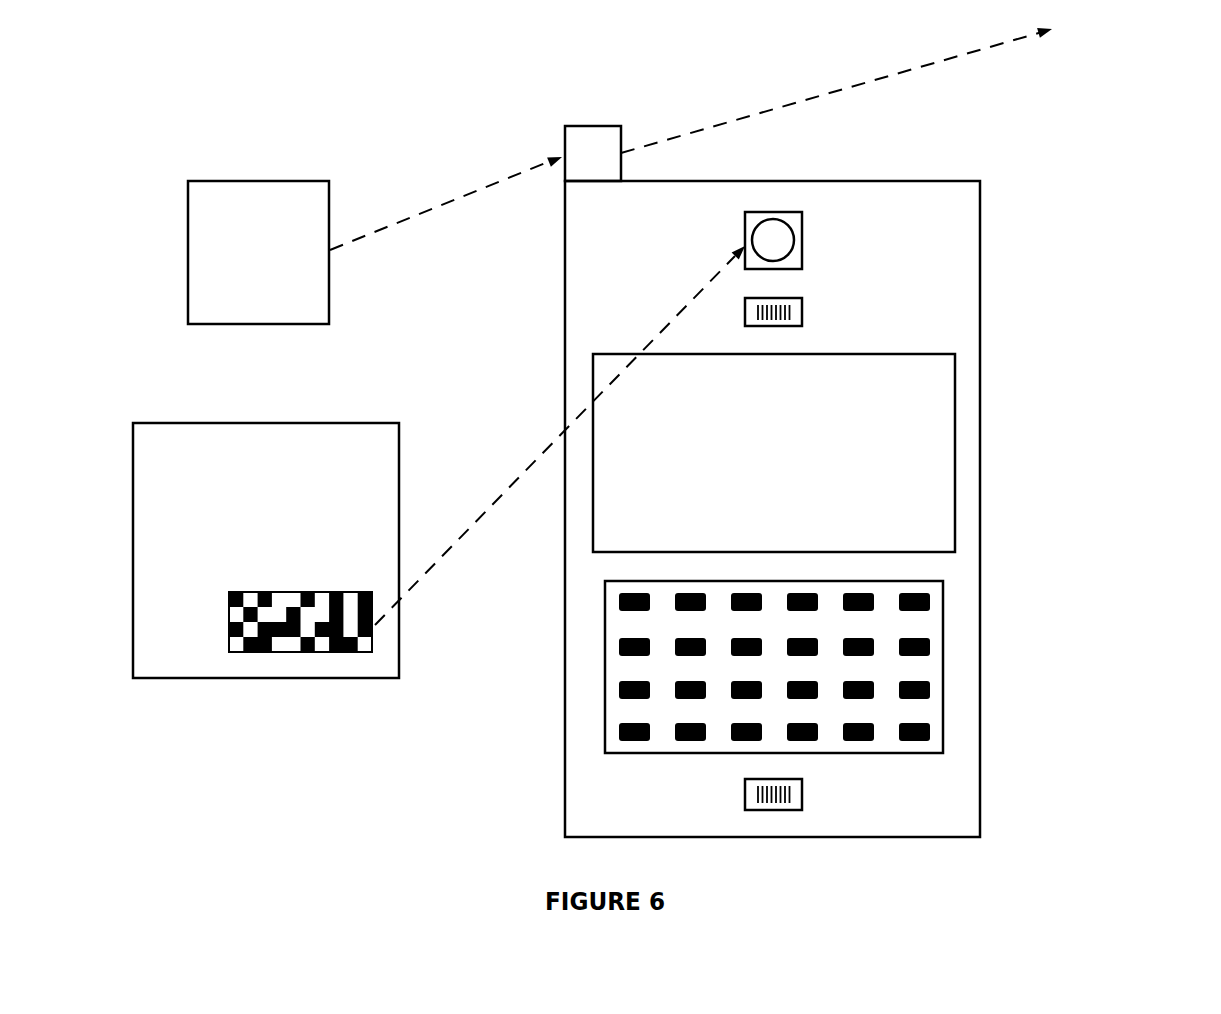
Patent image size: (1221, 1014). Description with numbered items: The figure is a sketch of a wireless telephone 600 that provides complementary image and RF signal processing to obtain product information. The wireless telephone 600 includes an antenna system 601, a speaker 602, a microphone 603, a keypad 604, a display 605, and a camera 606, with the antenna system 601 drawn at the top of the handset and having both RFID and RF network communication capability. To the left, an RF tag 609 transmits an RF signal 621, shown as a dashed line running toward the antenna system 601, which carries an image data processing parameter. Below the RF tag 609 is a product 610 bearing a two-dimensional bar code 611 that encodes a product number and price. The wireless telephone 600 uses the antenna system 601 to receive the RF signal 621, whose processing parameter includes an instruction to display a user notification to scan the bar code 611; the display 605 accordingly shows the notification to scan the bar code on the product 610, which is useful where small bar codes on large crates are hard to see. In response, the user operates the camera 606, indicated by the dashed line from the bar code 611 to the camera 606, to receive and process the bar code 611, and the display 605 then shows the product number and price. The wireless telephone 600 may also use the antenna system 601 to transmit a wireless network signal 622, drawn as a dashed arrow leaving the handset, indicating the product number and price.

The wireless telephone 600 is at (1137, 47).
The antenna system 601 is at (580, 126).
The speaker 602 is at (803, 312).
The microphone 603 is at (803, 795).
The keypad 604 is at (672, 753).
The display 605 is at (940, 354).
The camera 606 is at (803, 240).
The RF tag 609 is at (258, 252).
The product 610 is at (266, 550).
The two-dimensional bar code 611 is at (229, 626).
The RF signal 621 is at (456, 197).
The wireless network signal 622 is at (765, 113).